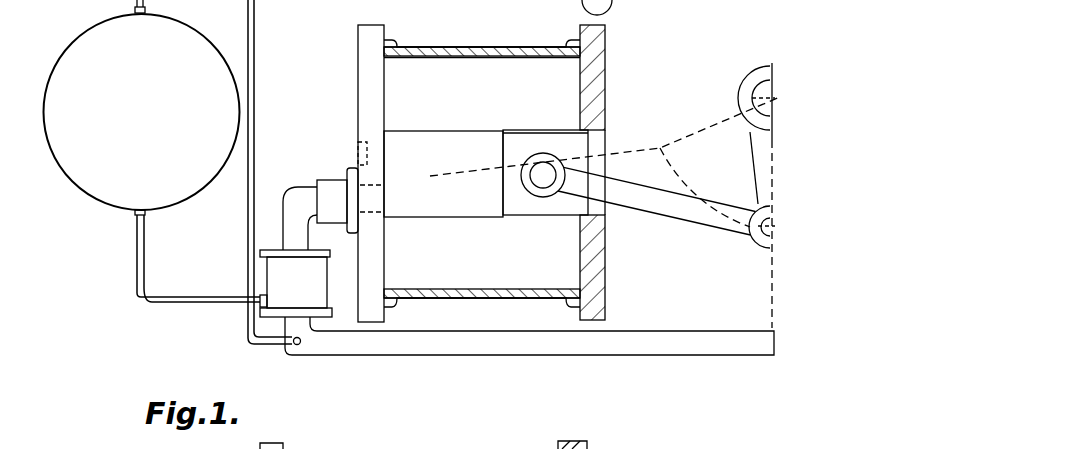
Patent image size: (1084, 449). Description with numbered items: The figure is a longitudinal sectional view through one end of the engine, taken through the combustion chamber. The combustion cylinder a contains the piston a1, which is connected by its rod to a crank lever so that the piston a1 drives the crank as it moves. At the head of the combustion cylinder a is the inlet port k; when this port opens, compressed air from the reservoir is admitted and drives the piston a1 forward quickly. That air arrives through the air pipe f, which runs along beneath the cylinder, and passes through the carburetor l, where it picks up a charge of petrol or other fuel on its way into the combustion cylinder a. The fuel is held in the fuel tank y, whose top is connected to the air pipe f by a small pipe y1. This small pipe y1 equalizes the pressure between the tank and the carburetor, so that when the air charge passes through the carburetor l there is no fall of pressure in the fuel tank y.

The fuel tank y is at (142, 107).
The small pipe y1 is at (274, 172).
The carburetor l is at (296, 283).
The inlet port k is at (375, 202).
The combustion cylinder a is at (443, 174).
The piston a1 is at (547, 147).
The air pipe f is at (529, 351).